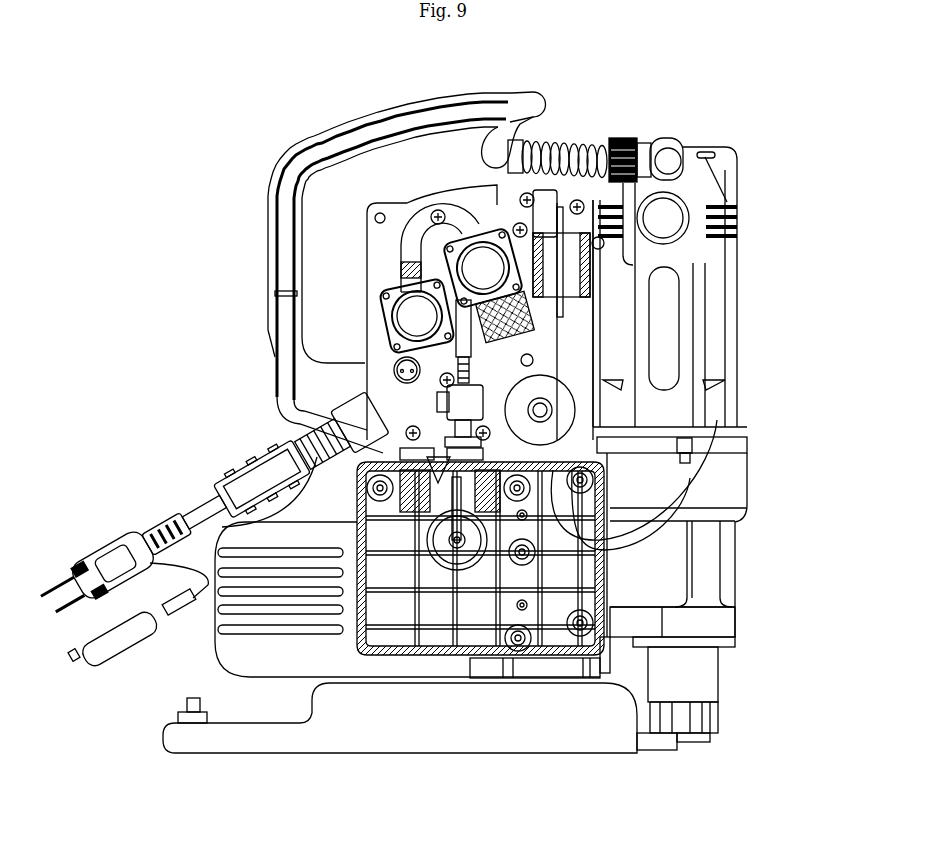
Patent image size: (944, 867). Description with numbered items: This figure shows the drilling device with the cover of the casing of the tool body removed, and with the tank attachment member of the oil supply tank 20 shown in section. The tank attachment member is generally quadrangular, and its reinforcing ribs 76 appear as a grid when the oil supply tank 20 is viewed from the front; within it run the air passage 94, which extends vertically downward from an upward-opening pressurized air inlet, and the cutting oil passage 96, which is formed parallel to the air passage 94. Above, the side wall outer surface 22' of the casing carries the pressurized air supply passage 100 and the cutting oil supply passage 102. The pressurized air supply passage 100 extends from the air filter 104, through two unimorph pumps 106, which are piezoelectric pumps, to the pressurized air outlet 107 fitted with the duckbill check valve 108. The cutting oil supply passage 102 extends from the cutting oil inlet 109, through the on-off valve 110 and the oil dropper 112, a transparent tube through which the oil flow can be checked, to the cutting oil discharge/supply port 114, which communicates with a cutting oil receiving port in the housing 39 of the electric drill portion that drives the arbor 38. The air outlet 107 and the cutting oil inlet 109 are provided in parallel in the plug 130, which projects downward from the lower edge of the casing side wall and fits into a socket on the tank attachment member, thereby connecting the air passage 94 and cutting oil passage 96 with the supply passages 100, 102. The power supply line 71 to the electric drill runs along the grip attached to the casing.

The power supply line 71 is at (347, 137).
The side wall outer surface 22' is at (372, 284).
The pressurized air supply passage 100 is at (408, 212).
The cutting oil supply passage 102 is at (483, 212).
The unimorph pumps 106 is at (437, 280).
The air filter 104 is at (640, 170).
The oil dropper 112 is at (580, 267).
The on-off valve 110 is at (463, 410).
The cutting oil inlet 109 is at (468, 458).
The cutting oil discharge/supply port 114 is at (685, 440).
The housing 39 is at (748, 485).
The arbor 38 is at (713, 693).
The duckbill check valve 108 is at (385, 395).
The plug 130 is at (347, 413).
The oil supply tank 20 is at (240, 470).
The pressurized air outlet 107 is at (405, 500).
The air passage 94 is at (423, 537).
The cutting oil passage 96 is at (450, 548).
The reinforcing ribs 76 is at (462, 600).